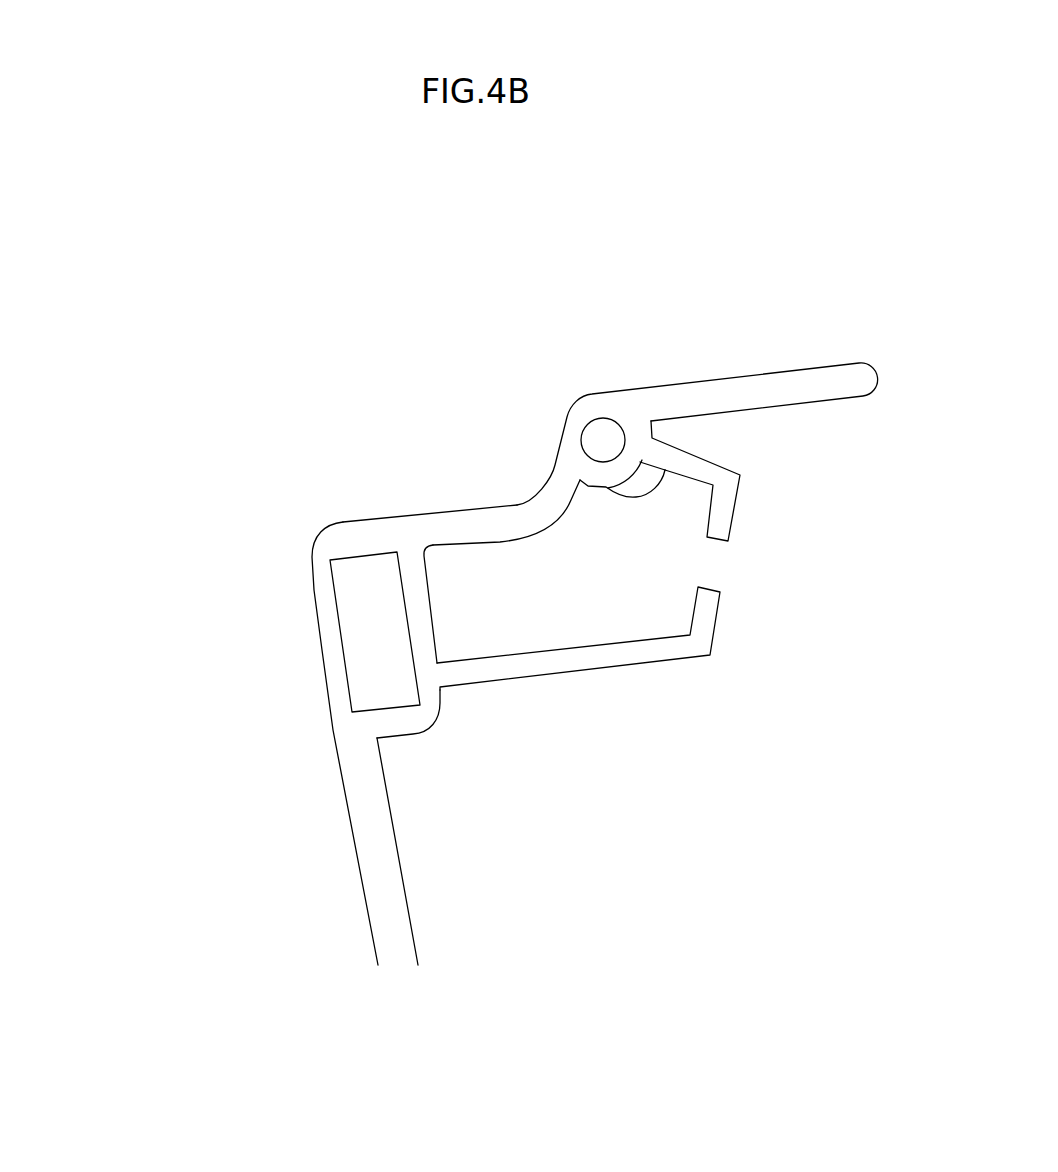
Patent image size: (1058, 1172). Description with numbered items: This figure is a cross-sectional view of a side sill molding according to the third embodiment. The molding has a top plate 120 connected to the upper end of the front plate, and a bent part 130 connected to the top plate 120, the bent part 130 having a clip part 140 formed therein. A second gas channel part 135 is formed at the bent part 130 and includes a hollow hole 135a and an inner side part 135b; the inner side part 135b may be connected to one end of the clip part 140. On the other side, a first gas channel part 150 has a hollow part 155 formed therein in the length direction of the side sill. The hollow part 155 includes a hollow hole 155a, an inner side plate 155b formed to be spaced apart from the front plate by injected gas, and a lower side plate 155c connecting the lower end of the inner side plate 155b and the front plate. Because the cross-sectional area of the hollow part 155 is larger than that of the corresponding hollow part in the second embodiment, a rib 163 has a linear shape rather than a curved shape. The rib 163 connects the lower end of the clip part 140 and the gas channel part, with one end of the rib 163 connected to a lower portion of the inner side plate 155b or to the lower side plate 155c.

The top plate 120 is at (488, 522).
The bent part 130 is at (573, 395).
The second gas channel part 135 is at (679, 355).
The hollow hole 135a is at (603, 440).
The inner side part 135b is at (633, 497).
The clip part 140 is at (717, 475).
The first gas channel part 150 is at (318, 537).
The hollow part 155 is at (255, 691).
The hollow hole 155a is at (371, 595).
The inner side plate 155b is at (432, 633).
The lower side plate 155c is at (432, 723).
The rib 163 is at (573, 673).